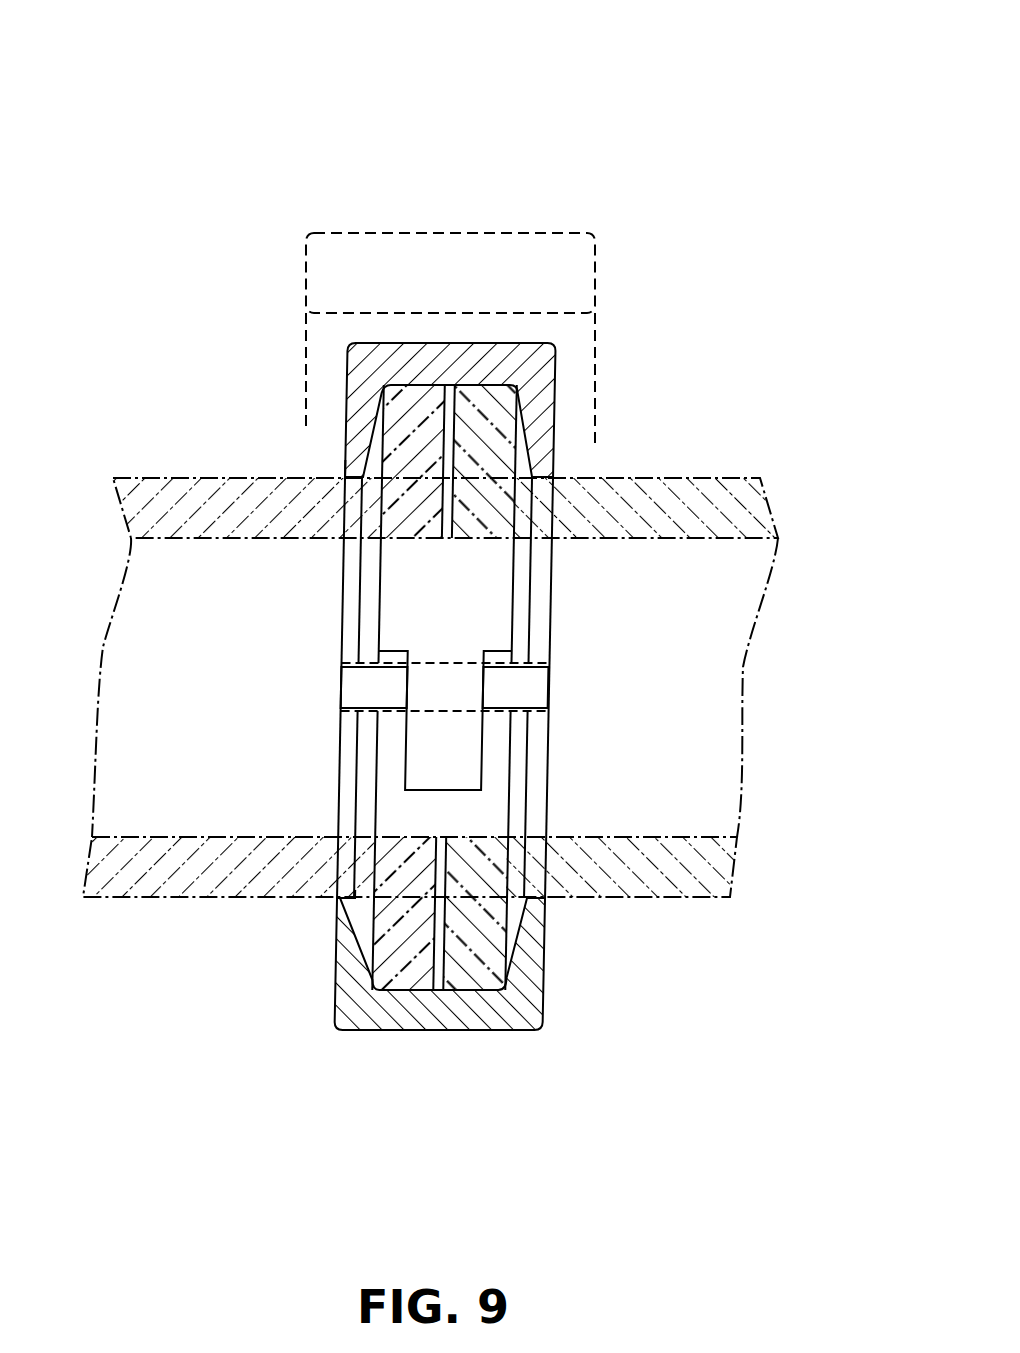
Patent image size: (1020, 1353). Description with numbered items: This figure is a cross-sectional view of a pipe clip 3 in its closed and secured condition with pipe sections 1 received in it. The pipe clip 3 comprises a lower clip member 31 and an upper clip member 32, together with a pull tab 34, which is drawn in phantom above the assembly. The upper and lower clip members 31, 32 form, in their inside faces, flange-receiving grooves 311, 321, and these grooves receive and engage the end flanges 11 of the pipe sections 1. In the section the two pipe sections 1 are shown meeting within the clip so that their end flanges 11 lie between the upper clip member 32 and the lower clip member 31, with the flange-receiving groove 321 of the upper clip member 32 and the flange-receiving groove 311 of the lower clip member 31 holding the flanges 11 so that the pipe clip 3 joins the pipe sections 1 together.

The pipe section 1 is at (180, 487).
The pipe clip 3 is at (557, 385).
The end flange 11 is at (412, 405).
The lower clip member 31 is at (445, 1033).
The flange-receiving groove 311 is at (357, 920).
The upper clip member 32 is at (348, 352).
The flange-receiving groove 321 is at (345, 462).
The pull tab 34 is at (413, 233).